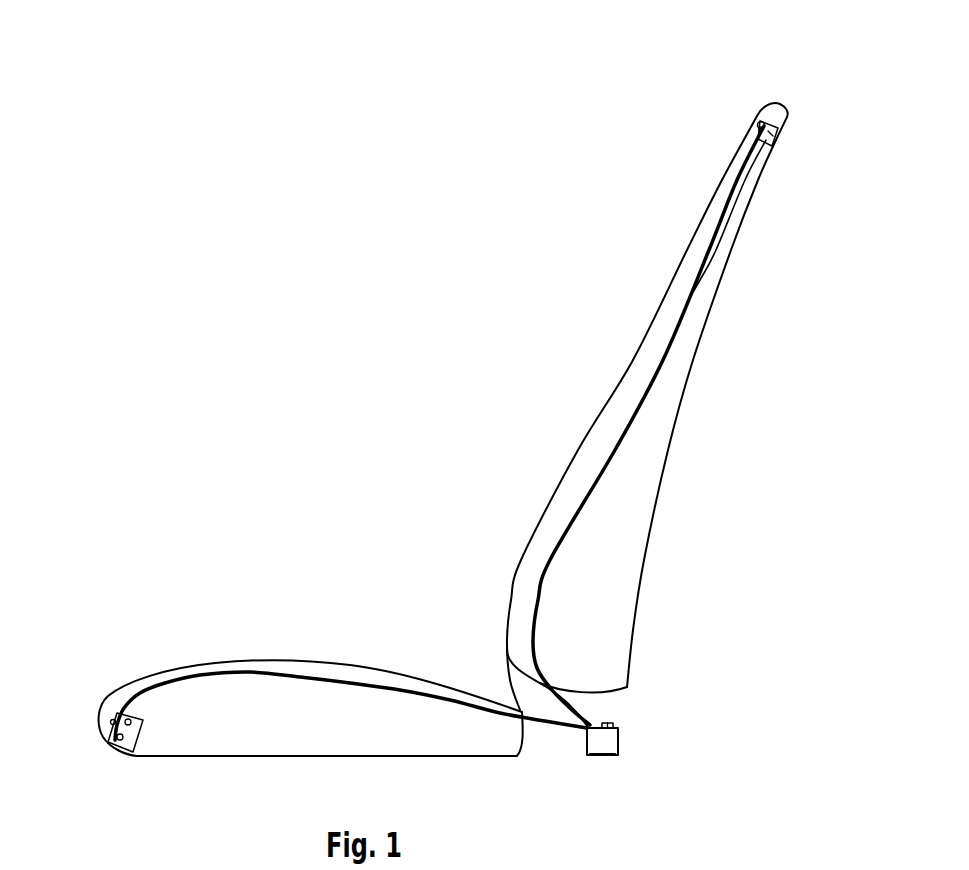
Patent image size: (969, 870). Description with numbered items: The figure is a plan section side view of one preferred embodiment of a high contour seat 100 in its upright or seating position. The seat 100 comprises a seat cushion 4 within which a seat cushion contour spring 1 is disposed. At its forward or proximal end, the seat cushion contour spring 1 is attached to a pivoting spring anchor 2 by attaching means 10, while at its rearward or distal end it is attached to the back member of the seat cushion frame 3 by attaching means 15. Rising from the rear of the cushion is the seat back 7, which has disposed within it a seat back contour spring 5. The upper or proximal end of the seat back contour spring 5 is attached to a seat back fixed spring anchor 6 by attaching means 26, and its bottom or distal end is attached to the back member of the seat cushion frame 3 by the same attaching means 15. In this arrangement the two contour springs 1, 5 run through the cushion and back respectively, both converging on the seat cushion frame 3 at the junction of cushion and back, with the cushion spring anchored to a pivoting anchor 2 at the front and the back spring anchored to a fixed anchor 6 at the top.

The seat 100 is at (317, 323).
The seat cushion contour spring 1 is at (355, 683).
The pivoting spring anchor 2 is at (132, 752).
The seat cushion frame 3 is at (603, 740).
The seat cushion 4 is at (217, 722).
The seat back contour spring 5 is at (685, 300).
The seat back fixed spring anchor 6 is at (776, 146).
The seat back 7 is at (613, 500).
The attaching means 10 is at (113, 718).
The attaching means 15 is at (608, 724).
The attaching means 26 is at (758, 122).